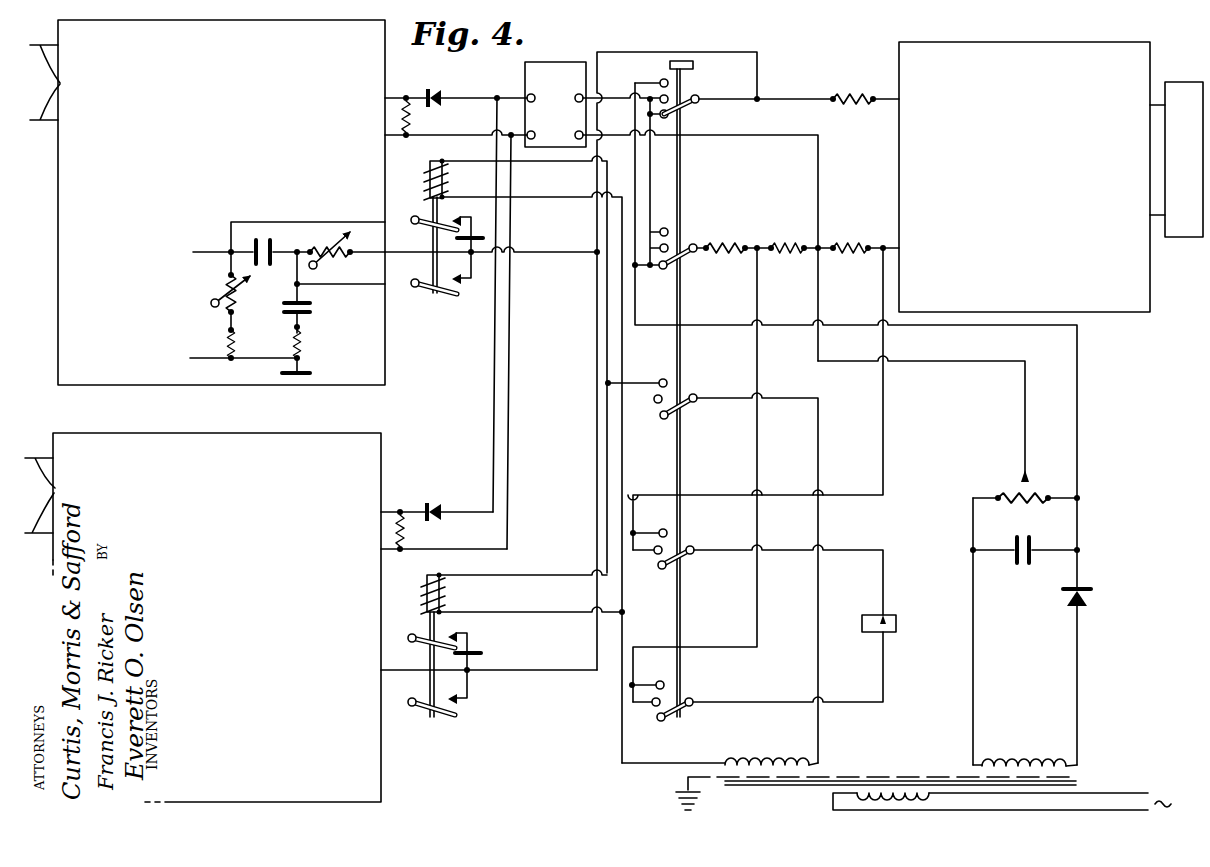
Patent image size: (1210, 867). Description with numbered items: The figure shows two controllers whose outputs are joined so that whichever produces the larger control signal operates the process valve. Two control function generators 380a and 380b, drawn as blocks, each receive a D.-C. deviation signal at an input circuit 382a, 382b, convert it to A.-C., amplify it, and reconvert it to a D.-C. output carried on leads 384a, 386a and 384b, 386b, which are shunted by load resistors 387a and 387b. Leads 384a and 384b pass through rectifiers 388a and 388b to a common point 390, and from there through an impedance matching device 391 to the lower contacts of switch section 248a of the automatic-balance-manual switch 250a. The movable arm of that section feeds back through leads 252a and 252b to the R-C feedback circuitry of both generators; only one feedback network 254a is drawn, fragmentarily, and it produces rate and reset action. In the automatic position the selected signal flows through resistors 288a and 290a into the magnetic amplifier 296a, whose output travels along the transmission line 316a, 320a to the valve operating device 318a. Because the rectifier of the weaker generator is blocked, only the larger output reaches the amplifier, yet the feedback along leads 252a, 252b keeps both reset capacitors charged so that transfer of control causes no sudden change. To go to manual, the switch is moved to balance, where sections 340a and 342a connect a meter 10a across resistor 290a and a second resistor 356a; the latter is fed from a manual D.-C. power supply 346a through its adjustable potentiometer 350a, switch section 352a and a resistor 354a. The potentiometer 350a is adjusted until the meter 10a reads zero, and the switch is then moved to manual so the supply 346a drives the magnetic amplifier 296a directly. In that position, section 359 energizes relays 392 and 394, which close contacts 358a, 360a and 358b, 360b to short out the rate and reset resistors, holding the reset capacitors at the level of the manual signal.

The control function generator 380a is at (238, 151).
The input circuit 382a is at (72, 82).
The output lead 384a is at (393, 96).
The output lead 386a is at (396, 136).
The load resistor 387a is at (412, 118).
The rectifier 388a is at (444, 96).
The common point 390 is at (498, 90).
The impedance matching device 391 is at (574, 122).
The relay 392 is at (422, 186).
The automatic-balance-manual switch 250a is at (700, 66).
The switch section 248a is at (688, 104).
The resistor 288a is at (840, 96).
The magnetic amplifier 296a is at (1040, 170).
The transmission line 316a is at (1160, 102).
The transmission line 320a is at (1199, 162).
The valve operating device 318a is at (1160, 218).
The resistor 354a is at (718, 245).
The second resistor 356a is at (786, 245).
The resistor 290a is at (850, 245).
The switch section 352a is at (680, 258).
The relay contact 358a is at (416, 224).
The relay contact 360a is at (420, 290).
The feedback network 254a is at (360, 334).
The lead 252a is at (520, 252).
The switch section 359 is at (684, 401).
The adjustable potentiometer 350a is at (994, 496).
The switch section 340a is at (684, 556).
The meter 10a is at (898, 622).
The manual D.-C. power supply 346a is at (1046, 666).
The switch section 342a is at (681, 702).
The control function generator 380b is at (240, 549).
The input circuit 382b is at (64, 495).
The output lead 384b is at (390, 510).
The output lead 386b is at (392, 549).
The load resistor 387b is at (414, 530).
The rectifier 388b is at (452, 499).
The relay 394 is at (419, 608).
The relay contact 358b is at (416, 643).
The relay contact 360b is at (418, 710).
The lead 252b is at (518, 672).